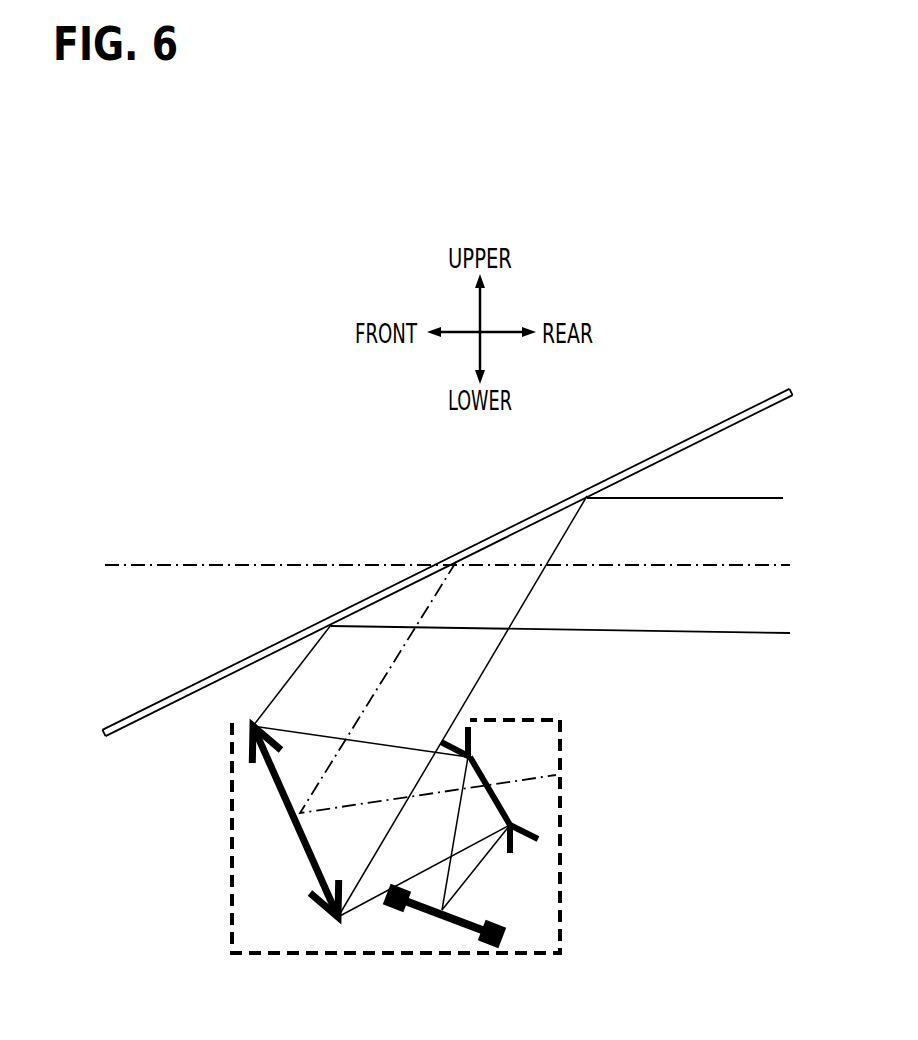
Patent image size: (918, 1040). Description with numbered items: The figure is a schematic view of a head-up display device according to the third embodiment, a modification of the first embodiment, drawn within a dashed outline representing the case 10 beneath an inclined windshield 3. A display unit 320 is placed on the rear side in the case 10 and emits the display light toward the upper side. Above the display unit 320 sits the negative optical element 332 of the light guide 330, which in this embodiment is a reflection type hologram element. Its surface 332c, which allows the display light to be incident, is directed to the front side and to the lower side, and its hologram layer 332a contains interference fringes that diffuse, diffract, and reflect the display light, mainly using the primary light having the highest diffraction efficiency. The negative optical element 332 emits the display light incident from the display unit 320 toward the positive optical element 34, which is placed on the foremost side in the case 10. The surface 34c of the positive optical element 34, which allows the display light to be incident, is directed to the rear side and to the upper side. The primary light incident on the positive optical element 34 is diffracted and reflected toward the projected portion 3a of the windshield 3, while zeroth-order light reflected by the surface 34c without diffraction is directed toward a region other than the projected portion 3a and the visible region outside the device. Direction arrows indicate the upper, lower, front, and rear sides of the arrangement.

The windshield 3 is at (447, 550).
The projected portion 3a is at (554, 521).
The case 10 is at (563, 915).
The positive optical element 34 is at (234, 755).
The surface 34c is at (280, 771).
The display unit 320 is at (442, 920).
The light guide 330 is at (560, 771).
The negative optical element 332 is at (541, 771).
The hologram layer 332a is at (537, 838).
The surface 332c is at (469, 775).